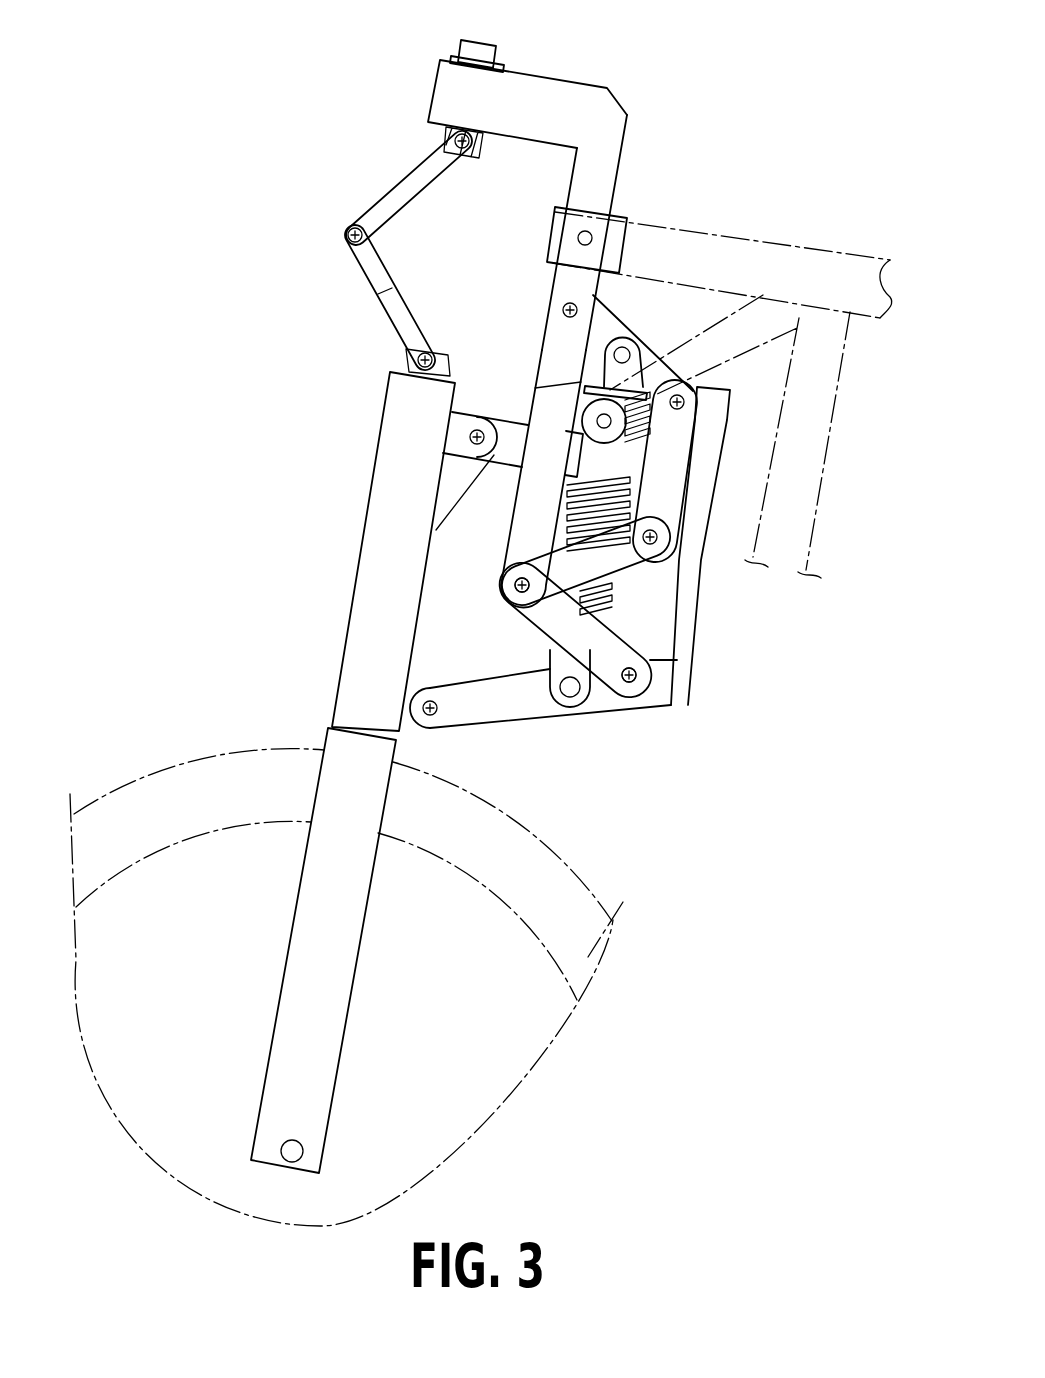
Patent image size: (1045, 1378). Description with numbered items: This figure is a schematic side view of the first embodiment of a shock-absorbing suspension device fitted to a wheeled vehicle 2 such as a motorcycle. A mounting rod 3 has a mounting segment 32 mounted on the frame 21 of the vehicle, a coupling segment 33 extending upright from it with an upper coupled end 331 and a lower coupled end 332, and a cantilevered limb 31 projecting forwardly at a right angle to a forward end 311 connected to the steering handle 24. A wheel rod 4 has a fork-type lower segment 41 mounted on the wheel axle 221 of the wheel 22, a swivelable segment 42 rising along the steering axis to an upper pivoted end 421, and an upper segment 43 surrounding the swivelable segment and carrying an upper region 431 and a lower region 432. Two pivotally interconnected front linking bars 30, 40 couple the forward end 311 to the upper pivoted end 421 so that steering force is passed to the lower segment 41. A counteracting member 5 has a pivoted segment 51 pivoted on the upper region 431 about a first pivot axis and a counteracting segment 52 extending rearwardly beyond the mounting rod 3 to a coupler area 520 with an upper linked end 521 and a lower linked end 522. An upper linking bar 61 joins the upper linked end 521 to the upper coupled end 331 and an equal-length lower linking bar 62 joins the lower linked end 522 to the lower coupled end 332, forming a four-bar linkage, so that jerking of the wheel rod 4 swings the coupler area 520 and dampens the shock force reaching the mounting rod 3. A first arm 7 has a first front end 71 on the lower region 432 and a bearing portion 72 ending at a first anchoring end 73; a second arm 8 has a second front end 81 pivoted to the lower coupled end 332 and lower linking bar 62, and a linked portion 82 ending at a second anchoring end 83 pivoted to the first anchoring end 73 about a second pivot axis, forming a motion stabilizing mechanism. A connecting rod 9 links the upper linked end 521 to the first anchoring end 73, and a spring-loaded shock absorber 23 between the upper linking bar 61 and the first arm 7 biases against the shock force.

The wheeled vehicle 2 is at (481, 613).
The frame 21 is at (680, 227).
The wheel 22 is at (580, 946).
The wheel axle 221 is at (303, 1150).
The spring-loaded shock absorber 23 is at (640, 597).
The steering handle 24 is at (477, 43).
The mounting rod 3 is at (525, 332).
The cantilevered limb 31 is at (487, 83).
The forward end 311 is at (447, 92).
The mounting segment 32 is at (600, 168).
The coupling segment 33 is at (505, 429).
The upper coupled end 331 is at (565, 303).
The lower coupled end 332 is at (500, 590).
The front linking bar 30 is at (417, 185).
The front linking bar 40 is at (380, 302).
The wheel rod 4 is at (326, 759).
The lower segment 41 is at (326, 956).
The swivelable segment 42 is at (405, 352).
The upper pivoted end 421 is at (403, 363).
The upper segment 43 is at (372, 465).
The upper region 431 is at (473, 423).
The lower region 432 is at (421, 706).
The counteracting member 5 is at (761, 471).
The pivoted segment 51 is at (500, 455).
The counteracting segment 52 is at (680, 493).
The coupler area 520 is at (697, 442).
The upper linked end 521 is at (686, 402).
The lower linked end 522 is at (660, 539).
The upper linking bar 61 is at (618, 320).
The lower linking bar 62 is at (633, 560).
The first arm 7 is at (621, 731).
The first front end 71 is at (448, 720).
The bearing portion 72 is at (542, 703).
The first anchoring end 73 is at (640, 683).
The second arm 8 is at (647, 674).
The second front end 81 is at (522, 585).
The linked portion 82 is at (640, 628).
The second anchoring end 83 is at (629, 675).
The connecting rod 9 is at (690, 647).